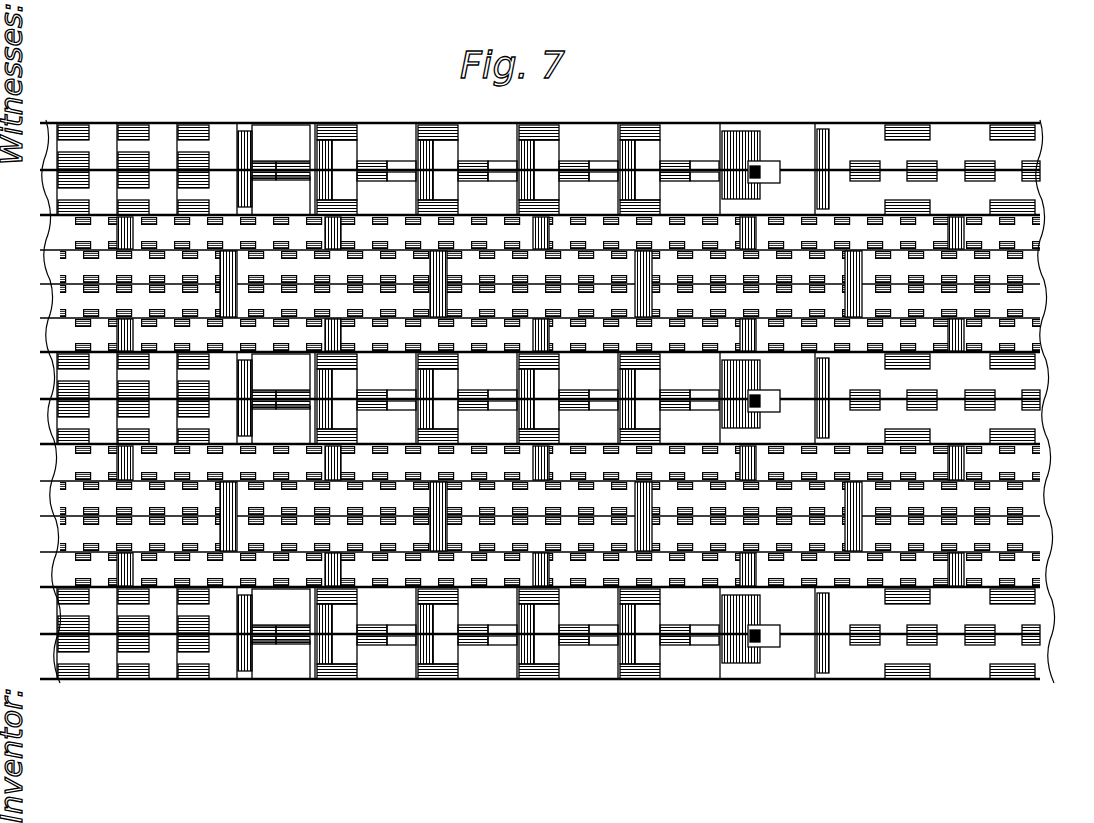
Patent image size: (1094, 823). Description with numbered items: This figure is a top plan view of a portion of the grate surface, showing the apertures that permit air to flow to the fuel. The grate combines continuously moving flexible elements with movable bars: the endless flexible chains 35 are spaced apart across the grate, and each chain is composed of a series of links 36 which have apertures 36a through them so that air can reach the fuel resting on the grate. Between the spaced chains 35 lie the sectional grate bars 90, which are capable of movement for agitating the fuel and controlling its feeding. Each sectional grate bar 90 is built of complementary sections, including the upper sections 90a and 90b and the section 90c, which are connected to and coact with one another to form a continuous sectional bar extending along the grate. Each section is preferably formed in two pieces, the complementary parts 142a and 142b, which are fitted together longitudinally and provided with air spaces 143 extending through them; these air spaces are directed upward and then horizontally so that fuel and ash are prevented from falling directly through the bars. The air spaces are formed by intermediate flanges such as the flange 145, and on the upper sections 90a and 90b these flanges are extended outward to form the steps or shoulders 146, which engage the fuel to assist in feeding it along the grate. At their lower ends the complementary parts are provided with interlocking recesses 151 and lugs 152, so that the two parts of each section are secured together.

The upper section of the sectional grate bar 90a is at (142, 118).
The sectional grate bar 90 is at (271, 113).
The upper section of the sectional grate bar 90b is at (582, 409).
The section of the sectional grate bar 90c is at (942, 119).
The complementary part of the bar section 142a is at (393, 129).
The complementary part of the bar section 142b is at (283, 192).
The intermediate flange 145 is at (273, 133).
The steps or shoulders 146 is at (323, 140).
The air spaces 143 is at (579, 160).
The interlocking recesses 151 is at (779, 165).
The lugs 152 is at (758, 165).
The links 36 is at (60, 278).
The apertures 36a is at (62, 330).
The endless flexible chains 35 is at (1043, 272).